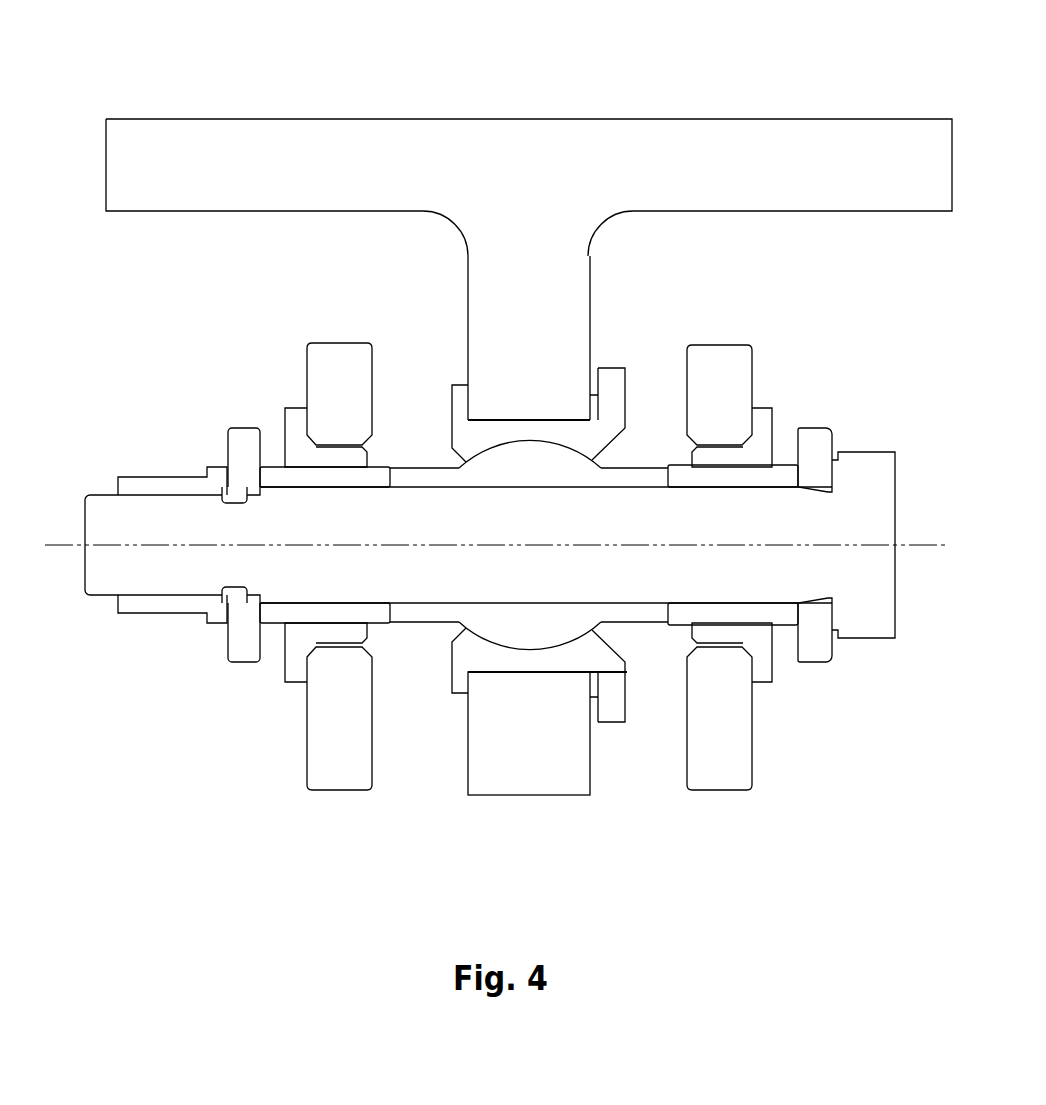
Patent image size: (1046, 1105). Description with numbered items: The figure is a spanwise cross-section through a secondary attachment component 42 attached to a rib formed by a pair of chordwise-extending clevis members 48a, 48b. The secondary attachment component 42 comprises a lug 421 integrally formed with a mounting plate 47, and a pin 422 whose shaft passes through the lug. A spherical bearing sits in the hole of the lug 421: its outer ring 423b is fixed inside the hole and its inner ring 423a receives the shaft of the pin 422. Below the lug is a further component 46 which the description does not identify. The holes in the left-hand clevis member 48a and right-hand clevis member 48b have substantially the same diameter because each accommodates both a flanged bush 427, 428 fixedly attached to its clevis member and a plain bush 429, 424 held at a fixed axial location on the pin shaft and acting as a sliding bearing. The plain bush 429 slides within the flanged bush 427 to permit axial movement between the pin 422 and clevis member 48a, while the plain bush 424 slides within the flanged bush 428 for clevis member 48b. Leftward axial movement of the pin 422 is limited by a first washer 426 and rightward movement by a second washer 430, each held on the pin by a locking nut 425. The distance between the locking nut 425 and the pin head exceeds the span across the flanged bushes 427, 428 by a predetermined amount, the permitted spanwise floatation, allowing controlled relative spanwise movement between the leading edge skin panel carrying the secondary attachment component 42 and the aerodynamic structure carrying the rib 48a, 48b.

The secondary attachment component 42 is at (165, 790).
The lower holder block 46 is at (532, 763).
The mounting plate 47 is at (765, 163).
The lug 421 is at (527, 322).
The pin 422 is at (163, 517).
The inner ring 423a is at (628, 617).
The outer ring 423b is at (592, 440).
The plain bush 424 is at (772, 475).
The locking nut 425 is at (172, 605).
The first washer 426 is at (237, 450).
The flanged bush 427 is at (295, 657).
The flanged bush 428 is at (760, 645).
The plain bush 429 is at (280, 473).
The second washer 430 is at (817, 642).
The clevis member 48a is at (325, 392).
The clevis member 48b is at (733, 393).